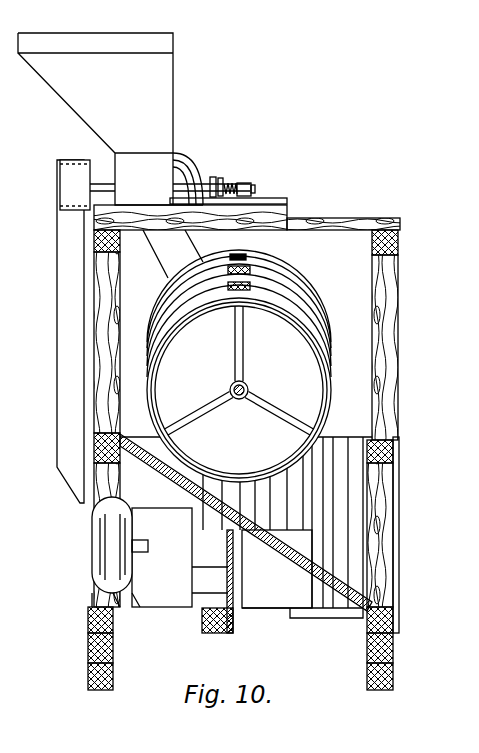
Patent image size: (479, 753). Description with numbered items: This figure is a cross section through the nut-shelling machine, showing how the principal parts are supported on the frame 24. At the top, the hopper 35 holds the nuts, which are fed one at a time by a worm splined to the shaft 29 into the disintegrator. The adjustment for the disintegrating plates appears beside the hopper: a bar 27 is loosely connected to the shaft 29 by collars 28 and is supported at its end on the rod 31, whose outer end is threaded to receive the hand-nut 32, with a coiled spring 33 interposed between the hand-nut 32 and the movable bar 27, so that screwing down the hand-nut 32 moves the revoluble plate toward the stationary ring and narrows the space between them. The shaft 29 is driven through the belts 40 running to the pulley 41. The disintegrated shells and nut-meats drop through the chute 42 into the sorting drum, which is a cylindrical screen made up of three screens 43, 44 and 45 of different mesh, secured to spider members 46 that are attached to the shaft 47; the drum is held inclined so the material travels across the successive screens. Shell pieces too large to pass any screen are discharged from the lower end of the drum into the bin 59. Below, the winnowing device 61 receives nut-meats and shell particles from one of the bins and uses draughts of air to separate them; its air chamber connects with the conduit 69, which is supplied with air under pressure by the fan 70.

The frame 24 is at (393, 386).
The bar 27 is at (287, 201).
The collars 28 is at (220, 178).
The shaft 29 is at (253, 187).
The rod 31 is at (212, 178).
The hand-nut 32 is at (246, 182).
The coiled spring 33 is at (232, 182).
The hopper 35 is at (147, 75).
The belts 40 is at (70, 267).
The pulley 41 is at (60, 184).
The chute 42 is at (173, 259).
The screen 43 is at (299, 277).
The screen 44 is at (309, 303).
The screen 45 is at (321, 329).
The spider members 46 is at (283, 302).
The shaft 47 is at (248, 387).
The bin 59 is at (262, 493).
The winnowing device 61 is at (283, 594).
The conduit 69 is at (171, 594).
The fan 70 is at (103, 519).